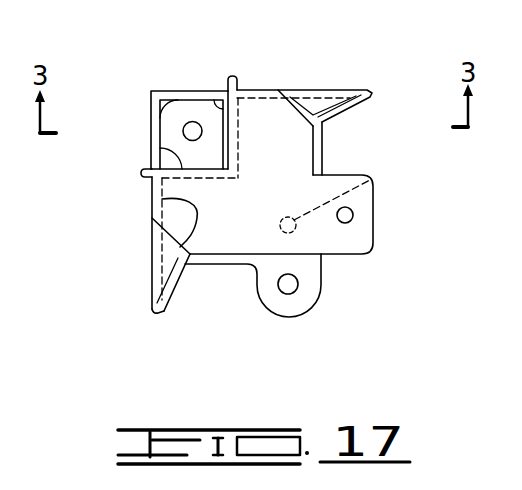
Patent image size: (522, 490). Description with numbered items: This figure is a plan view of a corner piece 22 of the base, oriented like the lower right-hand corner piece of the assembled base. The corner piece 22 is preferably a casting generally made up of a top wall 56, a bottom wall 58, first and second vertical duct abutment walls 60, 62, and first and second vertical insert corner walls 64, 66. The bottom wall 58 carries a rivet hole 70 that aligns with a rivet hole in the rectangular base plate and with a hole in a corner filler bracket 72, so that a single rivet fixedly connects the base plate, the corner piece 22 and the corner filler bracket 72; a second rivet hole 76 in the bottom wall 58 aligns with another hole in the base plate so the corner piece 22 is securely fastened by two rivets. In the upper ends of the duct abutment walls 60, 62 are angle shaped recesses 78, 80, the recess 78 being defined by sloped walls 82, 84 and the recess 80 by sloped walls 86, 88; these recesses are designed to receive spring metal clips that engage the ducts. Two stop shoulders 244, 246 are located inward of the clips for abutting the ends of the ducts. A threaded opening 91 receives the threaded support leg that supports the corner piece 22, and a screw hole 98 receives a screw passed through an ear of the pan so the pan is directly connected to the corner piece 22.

The corner piece 22 is at (373, 73).
The corner filler bracket 72 is at (150, 112).
The bottom wall 58 is at (173, 113).
The rivet hole 70 is at (193, 130).
The second vertical insert corner wall 66 is at (220, 104).
The first vertical insert corner wall 64 is at (164, 151).
The stop shoulder 246 is at (238, 78).
The second vertical duct abutment wall 62 is at (318, 91).
The sloped wall 88 is at (302, 100).
The sloped wall 86 is at (341, 112).
The angle shaped recess 80 is at (330, 103).
The second rivet hole 76 is at (376, 182).
The screw hole 98 is at (353, 215).
The threaded opening 91 is at (288, 294).
The stop shoulder 244 is at (140, 174).
The sloped wall 84 is at (172, 200).
The top wall 56 is at (172, 213).
The first vertical duct abutment wall 60 is at (152, 240).
The angle shaped recess 78 is at (167, 274).
The sloped wall 82 is at (172, 297).